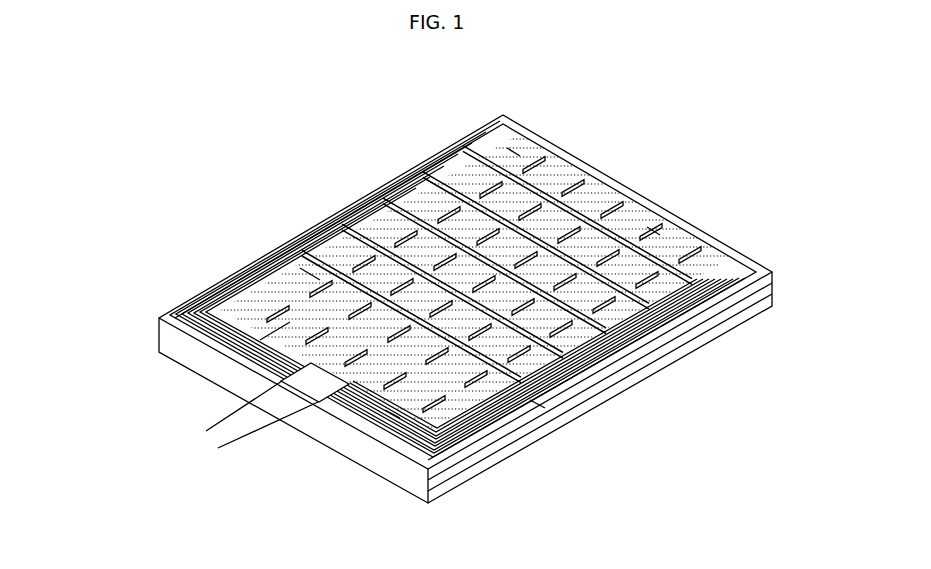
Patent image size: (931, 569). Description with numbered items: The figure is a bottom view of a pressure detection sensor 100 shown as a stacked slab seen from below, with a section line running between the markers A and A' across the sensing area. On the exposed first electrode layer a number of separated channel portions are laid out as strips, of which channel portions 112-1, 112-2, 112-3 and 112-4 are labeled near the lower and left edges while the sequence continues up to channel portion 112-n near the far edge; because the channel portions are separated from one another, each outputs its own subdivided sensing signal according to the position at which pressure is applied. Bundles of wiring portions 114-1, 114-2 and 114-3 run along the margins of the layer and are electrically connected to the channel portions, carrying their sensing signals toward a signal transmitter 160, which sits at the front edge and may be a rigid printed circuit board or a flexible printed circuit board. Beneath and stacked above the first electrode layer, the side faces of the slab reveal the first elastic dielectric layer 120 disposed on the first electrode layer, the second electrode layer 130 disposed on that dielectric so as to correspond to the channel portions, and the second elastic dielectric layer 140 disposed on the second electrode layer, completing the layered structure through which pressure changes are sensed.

The pressure detection sensor 100 is at (316, 168).
The channel portion 112-1 is at (283, 328).
The channel portion 112-2 is at (385, 410).
The channel portion 112-3 is at (300, 268).
The channel portion 112-4 is at (530, 400).
The sensing electrode 112-n is at (647, 227).
The wiring portion 114-1 is at (196, 318).
The wiring portion 114-2 is at (307, 387).
The wiring portion 114-3 is at (465, 435).
The first elastic dielectric layer 120 is at (638, 352).
The second electrode layer 130 is at (692, 338).
The second elastic dielectric layer 140 is at (736, 320).
The signal transmitter 160 is at (320, 388).
The section line A is at (211, 271).
The section line A' is at (540, 456).